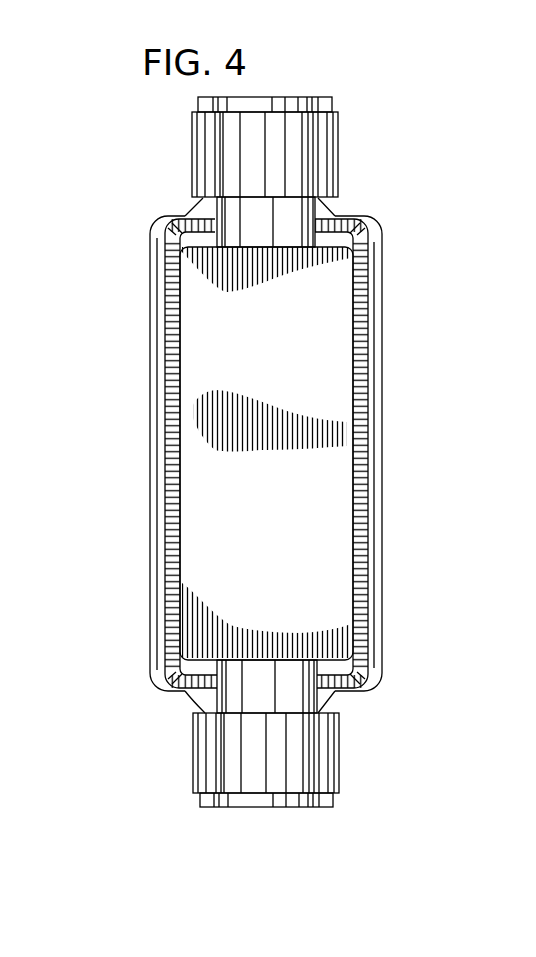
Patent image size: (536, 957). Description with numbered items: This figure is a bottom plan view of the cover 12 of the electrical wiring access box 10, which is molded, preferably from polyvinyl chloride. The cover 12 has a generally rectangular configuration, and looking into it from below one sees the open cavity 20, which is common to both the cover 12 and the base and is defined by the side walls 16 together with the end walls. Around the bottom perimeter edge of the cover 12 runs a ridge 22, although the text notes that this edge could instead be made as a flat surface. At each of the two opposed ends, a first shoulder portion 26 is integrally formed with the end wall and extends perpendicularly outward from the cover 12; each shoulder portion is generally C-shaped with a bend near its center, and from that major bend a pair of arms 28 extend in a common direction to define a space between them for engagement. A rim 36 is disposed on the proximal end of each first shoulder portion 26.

The electrical wiring access box 10 is at (408, 263).
The cover 12 is at (395, 428).
The side walls 16 is at (382, 512).
The open cavity 20 is at (535, 440).
The ridge 22 is at (367, 545).
The first shoulder portions 26 is at (207, 158).
The arms 28 is at (213, 132).
The rim 36 is at (330, 210).